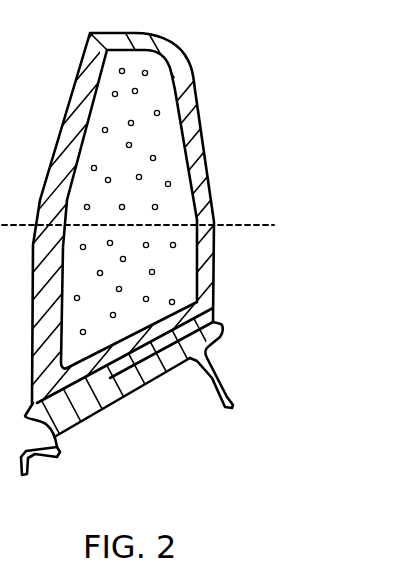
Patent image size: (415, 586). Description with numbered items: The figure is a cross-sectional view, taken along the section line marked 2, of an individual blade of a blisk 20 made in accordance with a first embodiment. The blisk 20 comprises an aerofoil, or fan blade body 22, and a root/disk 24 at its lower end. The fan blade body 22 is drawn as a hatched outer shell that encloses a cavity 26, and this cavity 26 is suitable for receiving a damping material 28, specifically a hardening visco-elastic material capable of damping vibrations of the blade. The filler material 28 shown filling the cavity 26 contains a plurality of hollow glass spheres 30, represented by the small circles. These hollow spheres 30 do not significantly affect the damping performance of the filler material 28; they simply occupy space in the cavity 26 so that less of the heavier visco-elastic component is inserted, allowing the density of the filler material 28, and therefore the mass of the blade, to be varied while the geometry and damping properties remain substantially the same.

The section line 2- 2 is at (257, 232).
The blisk 20 is at (207, 247).
The fan blade body 22 is at (190, 83).
The root/disk 24 is at (140, 388).
The cavity 26 is at (182, 282).
The damping material 28 is at (147, 201).
The hollow glass spheres 30 is at (160, 114).